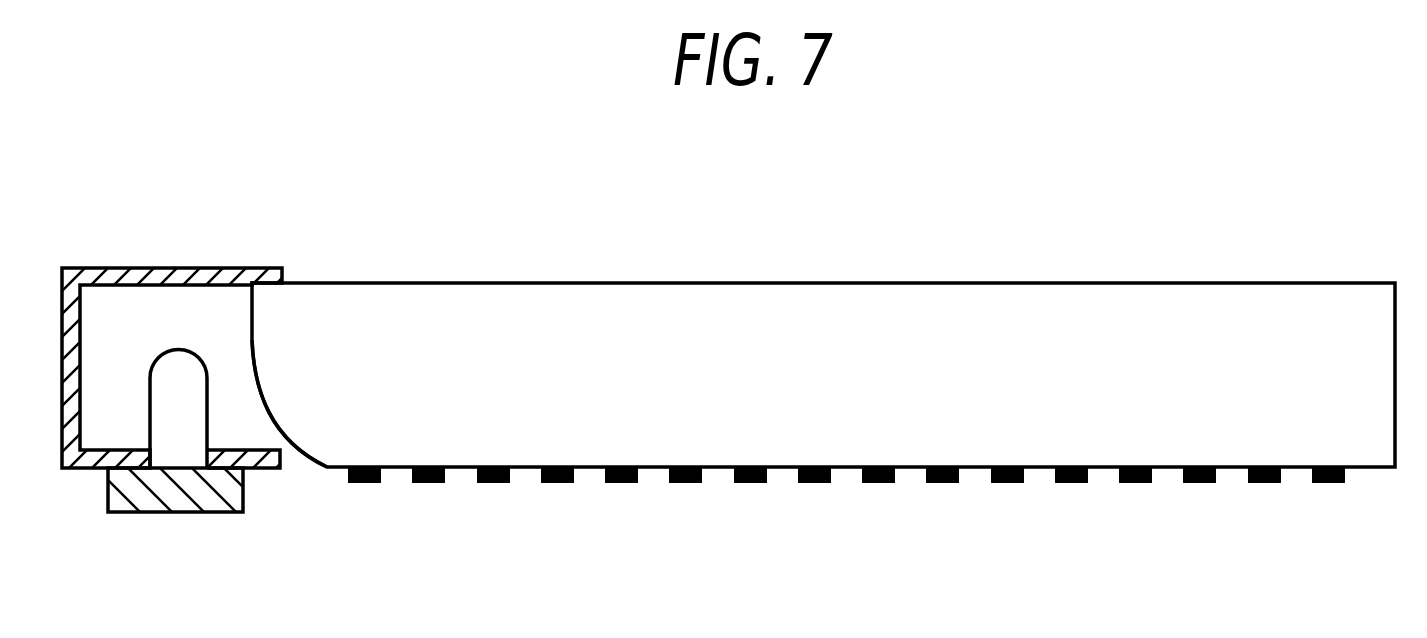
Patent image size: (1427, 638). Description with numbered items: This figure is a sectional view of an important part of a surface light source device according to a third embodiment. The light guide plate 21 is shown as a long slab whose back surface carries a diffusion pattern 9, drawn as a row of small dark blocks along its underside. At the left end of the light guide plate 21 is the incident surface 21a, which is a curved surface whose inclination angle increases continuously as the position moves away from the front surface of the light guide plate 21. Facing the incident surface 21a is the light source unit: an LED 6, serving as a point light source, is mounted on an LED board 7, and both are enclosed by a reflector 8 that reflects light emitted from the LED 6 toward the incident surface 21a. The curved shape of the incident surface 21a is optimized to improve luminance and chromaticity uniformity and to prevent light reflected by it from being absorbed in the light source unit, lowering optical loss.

The light guide plate 21 is at (1270, 282).
The incident surface 21a is at (252, 328).
The reflector 8 is at (180, 272).
The LED 6 is at (150, 373).
The LED board 7 is at (163, 507).
The diffusion pattern 9 is at (500, 483).